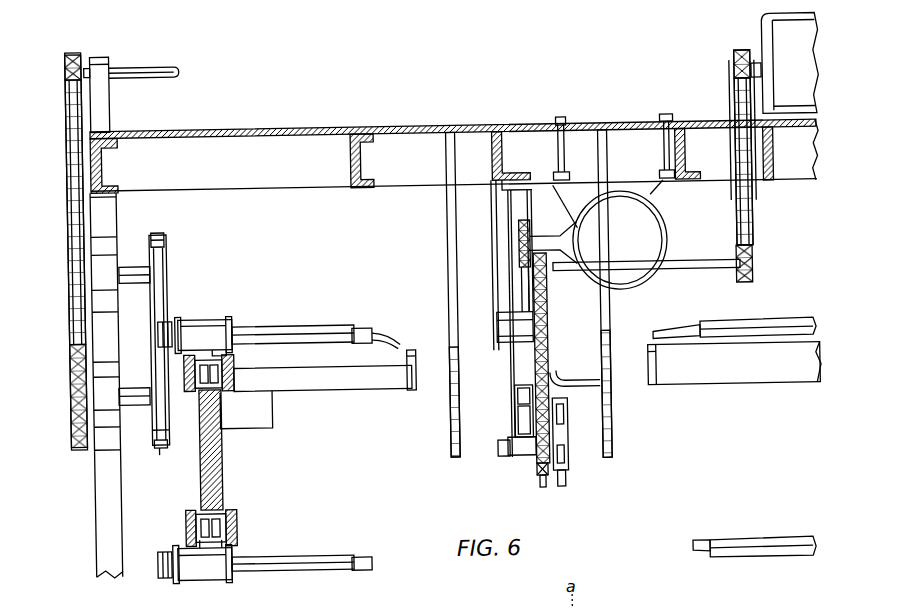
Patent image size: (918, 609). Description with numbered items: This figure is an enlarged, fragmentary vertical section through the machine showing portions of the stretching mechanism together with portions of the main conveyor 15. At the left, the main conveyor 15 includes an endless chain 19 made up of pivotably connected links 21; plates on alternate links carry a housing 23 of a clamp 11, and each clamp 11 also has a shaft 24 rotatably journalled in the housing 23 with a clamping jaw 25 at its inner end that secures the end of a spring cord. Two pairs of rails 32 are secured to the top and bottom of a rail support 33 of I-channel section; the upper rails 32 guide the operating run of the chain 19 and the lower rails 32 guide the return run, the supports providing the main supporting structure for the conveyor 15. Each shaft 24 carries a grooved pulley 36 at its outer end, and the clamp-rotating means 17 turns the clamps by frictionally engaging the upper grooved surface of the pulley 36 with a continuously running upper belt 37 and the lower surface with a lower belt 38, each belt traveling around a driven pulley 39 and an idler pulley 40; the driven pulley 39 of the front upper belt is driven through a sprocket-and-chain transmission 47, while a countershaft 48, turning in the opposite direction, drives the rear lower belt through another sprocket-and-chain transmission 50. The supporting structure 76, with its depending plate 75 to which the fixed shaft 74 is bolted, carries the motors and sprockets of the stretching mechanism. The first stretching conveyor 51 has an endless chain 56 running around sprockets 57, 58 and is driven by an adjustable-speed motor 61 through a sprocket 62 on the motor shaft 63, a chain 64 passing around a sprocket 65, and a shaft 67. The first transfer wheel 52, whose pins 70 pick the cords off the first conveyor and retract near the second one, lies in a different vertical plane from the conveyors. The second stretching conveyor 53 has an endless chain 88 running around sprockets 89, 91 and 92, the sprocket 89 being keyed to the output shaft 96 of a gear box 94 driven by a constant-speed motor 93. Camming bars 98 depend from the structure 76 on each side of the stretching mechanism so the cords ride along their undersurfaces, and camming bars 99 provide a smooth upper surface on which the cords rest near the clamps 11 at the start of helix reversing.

The clamp 11 is at (307, 325).
The main conveyor 15 is at (194, 465).
The clamp-rotating means 17 is at (168, 236).
The endless chain 19 is at (224, 388).
The link 21 is at (206, 380).
The housing 23 is at (194, 322).
The shaft 24 is at (250, 327).
The clamping jaw 25 is at (356, 329).
The rail 32 is at (235, 372).
The rail support 33 is at (223, 469).
The grooved pulley 36 is at (158, 338).
The upper belt 37 is at (157, 233).
The lower belt 38 is at (158, 449).
The driven pulley 39 is at (152, 432).
The idler pulley 40 is at (168, 252).
The sprocket-and-chain transmission 47 is at (93, 510).
The countershaft 48 is at (157, 70).
The sprocket-and-chain transmission 50 is at (68, 120).
The first stretching conveyor 51 is at (547, 477).
The first transfer wheel 52 is at (565, 478).
The second stretching conveyor 53 is at (524, 385).
The endless chain 56 is at (548, 345).
The sprocket 57 is at (549, 368).
The sprocket 58 is at (542, 476).
The adjustable-speed motor 61 is at (775, 13).
The sprocket 62 is at (736, 70).
The motor shaft 63 is at (756, 62).
The chain 64 is at (739, 135).
The sprocket 65 is at (735, 280).
The shaft 67 is at (680, 262).
The pin 70 is at (558, 435).
The fixed shaft 74 is at (527, 458).
The depending plate 75 is at (508, 205).
The supporting structure 76 is at (374, 125).
The endless chain 88 is at (525, 293).
The sprocket 89 is at (519, 238).
The sprocket 91 is at (518, 415).
The sprocket 92 is at (518, 393).
The constant-speed motor 93 is at (660, 220).
The gear box 94 is at (640, 280).
The output shaft 96 is at (540, 240).
The camming bar 98 is at (449, 195).
The camming bar 99 is at (408, 386).